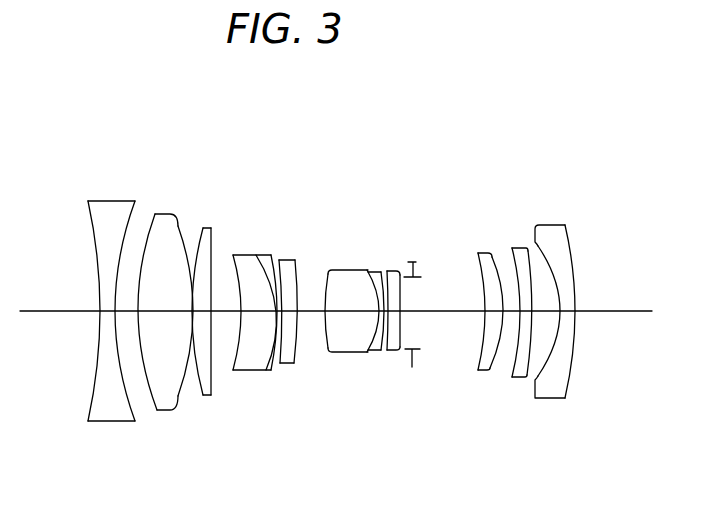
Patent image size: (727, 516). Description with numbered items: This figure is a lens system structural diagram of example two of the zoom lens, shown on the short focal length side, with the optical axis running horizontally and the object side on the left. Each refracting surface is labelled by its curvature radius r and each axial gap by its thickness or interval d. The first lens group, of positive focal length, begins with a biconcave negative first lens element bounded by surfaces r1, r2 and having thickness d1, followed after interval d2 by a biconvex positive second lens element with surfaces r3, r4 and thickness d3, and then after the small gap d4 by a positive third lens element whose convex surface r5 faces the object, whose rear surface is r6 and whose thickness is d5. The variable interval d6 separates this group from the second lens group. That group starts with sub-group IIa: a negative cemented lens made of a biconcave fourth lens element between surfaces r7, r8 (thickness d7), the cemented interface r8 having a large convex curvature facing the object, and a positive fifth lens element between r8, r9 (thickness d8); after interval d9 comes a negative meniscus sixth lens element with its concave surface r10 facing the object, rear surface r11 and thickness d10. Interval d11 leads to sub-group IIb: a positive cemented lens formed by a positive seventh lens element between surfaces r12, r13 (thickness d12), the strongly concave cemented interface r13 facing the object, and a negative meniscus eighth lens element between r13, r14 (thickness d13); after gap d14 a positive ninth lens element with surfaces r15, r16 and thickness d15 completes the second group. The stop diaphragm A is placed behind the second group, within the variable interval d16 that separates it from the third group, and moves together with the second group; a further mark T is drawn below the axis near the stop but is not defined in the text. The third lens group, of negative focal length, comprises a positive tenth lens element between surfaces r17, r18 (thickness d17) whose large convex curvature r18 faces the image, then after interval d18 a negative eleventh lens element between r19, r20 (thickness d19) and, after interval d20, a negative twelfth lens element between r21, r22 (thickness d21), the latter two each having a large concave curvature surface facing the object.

The object-side surface of first lens element r1 is at (88, 203).
The image-side surface of first lens element r2 is at (125, 207).
The object-side surface of second lens element r3 is at (152, 214).
The image-side surface of second lens element r4 is at (172, 218).
The object-side surface of third lens element r5 is at (201, 228).
The image-side surface of third lens element r6 is at (213, 229).
The object-side surface of fourth lens element r7 is at (233, 256).
The cemented interface of fourth and fifth lens elements r8 is at (255, 255).
The image-side surface of fifth lens element r9 is at (252, 255).
The object-side surface of sixth lens element r10 is at (283, 260).
The image-side surface of sixth lens element r11 is at (297, 262).
The object-side surface of seventh lens element r12 is at (327, 270).
The cemented interface of seventh and eighth lens elements r13 is at (360, 270).
The image-side surface of eighth lens element r14 is at (378, 272).
The object-side surface of ninth lens element r15 is at (390, 271).
The image-side surface of ninth lens element r16 is at (401, 273).
The object-side surface of tenth lens element r17 is at (477, 253).
The image-side surface of tenth lens element r18 is at (492, 256).
The object-side surface of eleventh lens element r19 is at (512, 248).
The image-side surface of eleventh lens element r20 is at (530, 250).
The object-side surface of twelfth lens element r21 is at (537, 228).
The image-side surface of twelfth lens element r22 is at (568, 232).
The thickness of first lens element d1 is at (108, 311).
The interval between first and second lens elements d2 is at (127, 311).
The thickness of second lens element d3 is at (165, 311).
The interval between second and third lens elements d4 is at (192, 311).
The thickness of third lens element d5 is at (202, 311).
The interval between first and second lens groups d6 is at (226, 311).
The thickness of fourth lens element d7 is at (258, 311).
The thickness of fifth lens element d8 is at (277, 311).
The interval between fifth and sixth lens elements d9 is at (280, 311).
The thickness of sixth lens element d10 is at (289, 311).
The interval between lens groups IIa and IIb d11 is at (311, 311).
The thickness of seventh lens element d12 is at (352, 311).
The thickness of eighth lens element d13 is at (381, 311).
The interval between eighth and ninth lens elements d14 is at (386, 311).
The thickness of ninth lens element d15 is at (394, 311).
The interval between second and third lens groups d16 is at (442, 311).
The thickness of tenth lens element d17 is at (494, 311).
The interval between tenth and eleventh lens elements d18 is at (511, 311).
The thickness of eleventh lens element d19 is at (526, 311).
The interval between eleventh and twelfth lens elements d20 is at (546, 311).
The thickness of twelfth lens element d21 is at (568, 311).
The stop diaphragm A is at (421, 268).
The stop position mark T is at (411, 359).